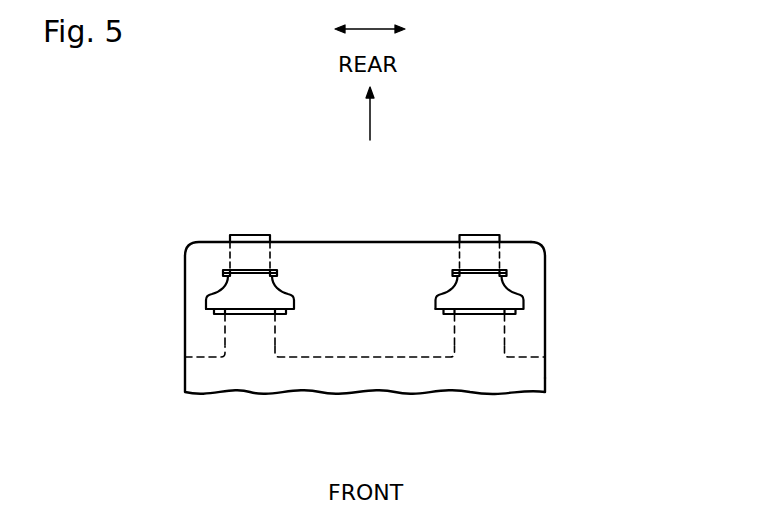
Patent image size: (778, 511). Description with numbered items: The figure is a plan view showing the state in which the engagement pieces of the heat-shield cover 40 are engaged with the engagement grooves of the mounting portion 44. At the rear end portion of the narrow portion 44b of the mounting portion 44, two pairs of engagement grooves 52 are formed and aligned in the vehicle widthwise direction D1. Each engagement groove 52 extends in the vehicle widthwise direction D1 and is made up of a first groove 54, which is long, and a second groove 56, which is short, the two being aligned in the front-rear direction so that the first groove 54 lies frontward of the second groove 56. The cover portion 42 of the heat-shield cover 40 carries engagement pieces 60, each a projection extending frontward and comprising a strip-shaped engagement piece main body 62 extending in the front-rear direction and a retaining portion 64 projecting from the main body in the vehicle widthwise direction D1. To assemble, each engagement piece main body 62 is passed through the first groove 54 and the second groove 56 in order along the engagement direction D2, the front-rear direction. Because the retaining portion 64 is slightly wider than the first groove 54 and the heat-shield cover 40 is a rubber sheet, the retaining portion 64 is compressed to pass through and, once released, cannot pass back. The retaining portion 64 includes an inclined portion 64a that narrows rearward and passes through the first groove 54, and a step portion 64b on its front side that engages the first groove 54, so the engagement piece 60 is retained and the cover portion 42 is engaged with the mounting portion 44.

The heat-shield cover 40 is at (403, 288).
The cover portion 42 is at (368, 357).
The mounting portion 44 is at (428, 318).
The narrow portion 44b is at (546, 293).
The engagement groove 52 is at (373, 282).
The first groove 54 is at (222, 310).
The second groove 56 is at (452, 271).
The engagement piece 60 is at (421, 289).
The engagement piece main body 62 is at (270, 262).
The retaining portion 64 is at (421, 309).
The inclined portion 64a is at (287, 292).
The step portion 64b is at (293, 307).
The vehicle widthwise direction D1 is at (372, 28).
The engagement direction D2 is at (370, 113).